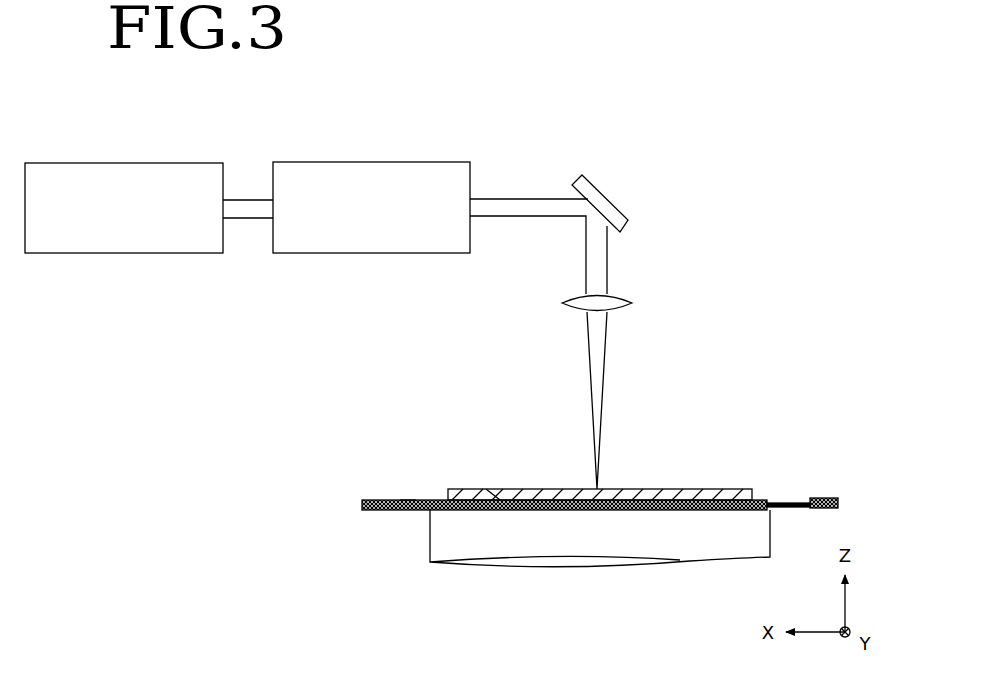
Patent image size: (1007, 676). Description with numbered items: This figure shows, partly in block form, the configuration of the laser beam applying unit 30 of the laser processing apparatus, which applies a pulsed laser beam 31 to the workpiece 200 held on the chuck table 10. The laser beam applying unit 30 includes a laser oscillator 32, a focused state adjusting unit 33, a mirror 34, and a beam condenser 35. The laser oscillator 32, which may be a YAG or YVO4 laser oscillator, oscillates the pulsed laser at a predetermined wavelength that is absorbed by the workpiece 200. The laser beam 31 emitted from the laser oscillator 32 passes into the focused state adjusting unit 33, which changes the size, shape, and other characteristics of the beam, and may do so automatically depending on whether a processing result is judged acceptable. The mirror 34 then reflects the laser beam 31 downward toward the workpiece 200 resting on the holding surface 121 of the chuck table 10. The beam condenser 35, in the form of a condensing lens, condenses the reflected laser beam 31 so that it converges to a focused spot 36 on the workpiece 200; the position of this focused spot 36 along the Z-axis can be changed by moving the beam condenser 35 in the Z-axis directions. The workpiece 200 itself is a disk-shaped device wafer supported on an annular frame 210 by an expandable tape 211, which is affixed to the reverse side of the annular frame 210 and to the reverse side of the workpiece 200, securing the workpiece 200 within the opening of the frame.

The chuck table 10 is at (441, 536).
The laser beam applying unit 30 is at (797, 205).
The laser beam 31 is at (256, 198).
The laser oscillator 32 is at (128, 163).
The focused state adjusting unit 33 is at (345, 162).
The mirror 34 is at (622, 200).
The beam condenser 35 is at (632, 300).
The focused spot 36 is at (593, 485).
The holding surface 121 is at (492, 489).
The workpiece 200 is at (730, 489).
The annular frame 210 is at (368, 499).
The expandable tape 211 is at (408, 499).